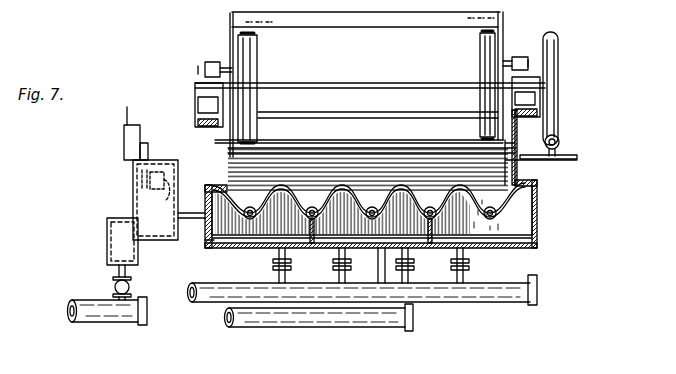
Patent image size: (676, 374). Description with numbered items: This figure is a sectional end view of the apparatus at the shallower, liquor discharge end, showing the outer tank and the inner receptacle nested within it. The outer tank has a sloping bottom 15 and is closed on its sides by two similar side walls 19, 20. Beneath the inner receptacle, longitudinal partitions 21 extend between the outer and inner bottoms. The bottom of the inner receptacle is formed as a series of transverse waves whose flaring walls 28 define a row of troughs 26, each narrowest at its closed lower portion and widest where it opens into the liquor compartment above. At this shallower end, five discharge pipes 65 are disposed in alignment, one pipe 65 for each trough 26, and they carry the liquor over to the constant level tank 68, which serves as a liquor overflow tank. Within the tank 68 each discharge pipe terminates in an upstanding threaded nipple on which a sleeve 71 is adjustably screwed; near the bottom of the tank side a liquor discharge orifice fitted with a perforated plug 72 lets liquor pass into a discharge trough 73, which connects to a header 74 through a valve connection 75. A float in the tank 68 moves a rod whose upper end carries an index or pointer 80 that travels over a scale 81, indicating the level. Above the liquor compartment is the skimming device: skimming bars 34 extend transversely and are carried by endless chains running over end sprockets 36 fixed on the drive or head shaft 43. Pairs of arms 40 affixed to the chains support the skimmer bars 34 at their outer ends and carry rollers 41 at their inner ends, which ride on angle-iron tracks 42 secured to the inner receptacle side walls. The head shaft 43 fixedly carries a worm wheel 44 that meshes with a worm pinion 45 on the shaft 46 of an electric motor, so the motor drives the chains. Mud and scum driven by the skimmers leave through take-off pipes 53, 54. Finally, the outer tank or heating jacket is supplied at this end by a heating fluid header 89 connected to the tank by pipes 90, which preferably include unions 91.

The sloping bottom of outer tank 15 is at (510, 247).
The side wall 19 is at (206, 240).
The side wall 20 is at (537, 218).
The partition 21 is at (314, 245).
The trough 26 is at (422, 200).
The flaring wall 28 is at (293, 193).
The skimming bar 34 is at (373, 143).
The end sprocket 36 is at (257, 63).
The arm 40 is at (232, 32).
The roller 41 is at (204, 66).
The track 42 is at (195, 101).
The head shaft 43 is at (342, 84).
The worm wheel 44 is at (560, 44).
The worm pinion 45 is at (560, 141).
The motor shaft 46 is at (555, 160).
The take-off pipe 53 is at (383, 268).
The take-off pipe 54 is at (355, 320).
The discharge pipe 65 is at (488, 203).
The constant level tank 68 is at (133, 178).
The sleeve 71 is at (160, 172).
The perforated plug 72 is at (128, 228).
The discharge trough 73 is at (107, 240).
The header 74 is at (72, 304).
The valve connection 75 is at (113, 283).
The index or pointer 80 is at (138, 144).
The scale 81 is at (127, 112).
The heating fluid header 89 is at (510, 290).
The pipe 90 is at (460, 280).
The union 91 is at (273, 262).